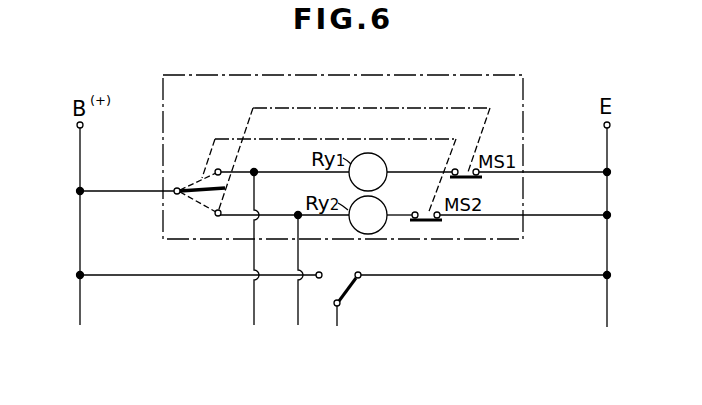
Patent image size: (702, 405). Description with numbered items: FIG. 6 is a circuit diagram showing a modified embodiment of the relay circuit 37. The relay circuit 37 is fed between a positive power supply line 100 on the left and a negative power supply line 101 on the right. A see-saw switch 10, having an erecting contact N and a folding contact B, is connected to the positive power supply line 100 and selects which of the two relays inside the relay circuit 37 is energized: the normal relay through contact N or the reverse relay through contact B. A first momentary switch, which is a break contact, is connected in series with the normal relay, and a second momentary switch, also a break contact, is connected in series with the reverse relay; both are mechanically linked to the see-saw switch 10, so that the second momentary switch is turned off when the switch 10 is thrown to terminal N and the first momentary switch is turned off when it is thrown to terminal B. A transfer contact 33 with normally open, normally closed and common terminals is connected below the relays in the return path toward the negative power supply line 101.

The see-saw switch 10 is at (195, 191).
The transfer contact 33 is at (352, 296).
The relay circuit 37 is at (415, 75).
The positive power supply line 100 is at (79, 234).
The negative power supply line 101 is at (607, 250).